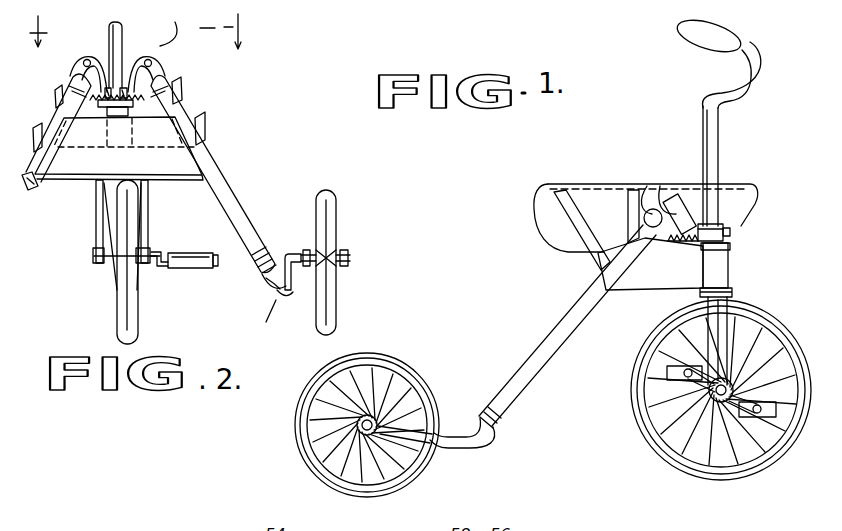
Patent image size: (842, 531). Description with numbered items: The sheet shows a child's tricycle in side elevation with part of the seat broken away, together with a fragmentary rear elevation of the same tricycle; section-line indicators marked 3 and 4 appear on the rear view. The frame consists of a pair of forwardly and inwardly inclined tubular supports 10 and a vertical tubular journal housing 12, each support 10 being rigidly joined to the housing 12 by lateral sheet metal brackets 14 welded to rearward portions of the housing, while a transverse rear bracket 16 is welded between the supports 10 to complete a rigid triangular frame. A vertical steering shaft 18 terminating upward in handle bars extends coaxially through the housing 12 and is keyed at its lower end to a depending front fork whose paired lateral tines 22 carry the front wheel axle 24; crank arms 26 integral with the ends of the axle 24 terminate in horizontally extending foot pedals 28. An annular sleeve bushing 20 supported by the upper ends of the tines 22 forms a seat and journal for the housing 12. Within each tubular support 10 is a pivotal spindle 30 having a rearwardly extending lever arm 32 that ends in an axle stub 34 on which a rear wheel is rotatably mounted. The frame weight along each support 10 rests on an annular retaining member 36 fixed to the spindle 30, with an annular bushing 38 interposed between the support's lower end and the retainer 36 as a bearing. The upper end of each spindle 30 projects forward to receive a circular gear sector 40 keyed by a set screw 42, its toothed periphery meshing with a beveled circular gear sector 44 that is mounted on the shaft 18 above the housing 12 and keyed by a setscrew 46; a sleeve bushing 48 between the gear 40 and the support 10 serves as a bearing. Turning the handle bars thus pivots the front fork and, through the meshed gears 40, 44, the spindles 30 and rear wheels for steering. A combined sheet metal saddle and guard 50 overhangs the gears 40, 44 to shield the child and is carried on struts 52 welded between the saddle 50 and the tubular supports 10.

In FIG. 2, the section line 3- 3 is at (218, 173).
In FIG. 2, the section line 4- 4 is at (143, 28).
In FIG. 2, the tubular support 10 is at (232, 198).
In FIG. 1, the tubular support 10 is at (503, 404).
In FIG. 1, the journal housing 12 is at (730, 267).
In FIG. 1, the lateral bracket 14 is at (665, 279).
In FIG. 2, the transverse rear bracket 16 is at (172, 167).
In FIG. 2, the steering shaft 18 is at (127, 43).
In FIG. 1, the steering shaft 18 is at (719, 144).
In FIG. 1, the annular sleeve bushing 20 is at (733, 293).
In FIG. 2, the fork tine 22 is at (148, 214).
In FIG. 1, the fork tine 22 is at (730, 330).
In FIG. 2, the axle 24 is at (145, 264).
In FIG. 2, the crank arm 26 is at (166, 257).
In FIG. 1, the crank arm 26 is at (710, 389).
In FIG. 2, the foot pedal 28 is at (206, 269).
In FIG. 1, the foot pedal 28 is at (667, 374).
In FIG. 2, the pivotal spindle 30 is at (30, 190).
In FIG. 1, the pivotal spindle 30 is at (472, 448).
In FIG. 2, the lever arm 32 is at (296, 285).
In FIG. 1, the lever arm 32 is at (451, 478).
In FIG. 2, the axle stub 34 is at (290, 254).
In FIG. 1, the axle stub 34 is at (357, 426).
In FIG. 2, the annular retaining member 36 is at (265, 273).
In FIG. 1, the annular retaining member 36 is at (478, 421).
In FIG. 2, the annular bushing 38 is at (264, 254).
In FIG. 1, the annular bushing 38 is at (485, 410).
In FIG. 2, the circular gear sector 40 is at (100, 68).
In FIG. 1, the circular gear sector 40 is at (677, 208).
In FIG. 2, the set screw 42 is at (84, 62).
In FIG. 1, the set screw 42 is at (650, 204).
In FIG. 2, the circular gear sector 44 is at (102, 107).
In FIG. 1, the circular gear sector 44 is at (735, 222).
In FIG. 1, the setscrew 46 is at (731, 234).
In FIG. 2, the annular sleeve bushing 48 is at (76, 76).
In FIG. 1, the annular sleeve bushing 48 is at (655, 207).
In FIG. 1, the saddle and guard 50 is at (584, 190).
In FIG. 2, the strut 52 is at (203, 126).
In FIG. 1, the strut 52 is at (627, 213).